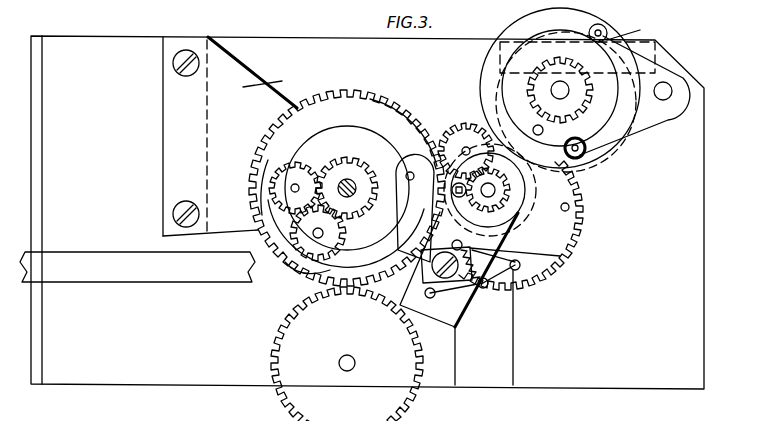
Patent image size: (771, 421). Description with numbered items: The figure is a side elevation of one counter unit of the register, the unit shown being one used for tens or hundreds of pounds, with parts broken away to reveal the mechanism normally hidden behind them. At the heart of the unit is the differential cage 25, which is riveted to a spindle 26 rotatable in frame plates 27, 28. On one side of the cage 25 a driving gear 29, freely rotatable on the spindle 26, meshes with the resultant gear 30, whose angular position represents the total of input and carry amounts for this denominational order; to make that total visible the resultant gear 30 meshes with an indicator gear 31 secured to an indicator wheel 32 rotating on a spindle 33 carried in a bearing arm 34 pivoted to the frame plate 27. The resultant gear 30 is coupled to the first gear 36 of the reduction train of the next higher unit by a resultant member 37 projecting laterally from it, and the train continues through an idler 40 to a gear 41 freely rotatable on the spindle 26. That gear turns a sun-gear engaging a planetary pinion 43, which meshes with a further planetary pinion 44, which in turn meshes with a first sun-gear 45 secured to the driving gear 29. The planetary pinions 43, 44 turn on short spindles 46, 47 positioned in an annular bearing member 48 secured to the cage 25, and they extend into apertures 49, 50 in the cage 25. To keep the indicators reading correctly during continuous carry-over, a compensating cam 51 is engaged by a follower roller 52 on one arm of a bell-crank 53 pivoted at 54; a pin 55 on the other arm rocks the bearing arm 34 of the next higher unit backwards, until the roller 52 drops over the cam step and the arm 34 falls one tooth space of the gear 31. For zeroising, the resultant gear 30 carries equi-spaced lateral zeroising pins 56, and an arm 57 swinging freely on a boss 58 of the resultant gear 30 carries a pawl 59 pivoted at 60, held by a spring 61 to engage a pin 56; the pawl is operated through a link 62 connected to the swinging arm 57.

The differential cage 25 is at (362, 290).
The spindle 26 is at (345, 180).
The frame plate 27 is at (262, 52).
The frame plate 28 is at (274, 80).
The driving gear 29 is at (348, 222).
The resultant gear 30 is at (553, 233).
The indicator gear 31 is at (542, 81).
The indicator wheel 32 is at (603, 26).
The spindle 33 is at (560, 80).
The bearing arm 34 is at (657, 42).
The first gear 36 is at (532, 187).
The resultant member 37 is at (469, 200).
The idler 40 is at (462, 125).
The gear 41 is at (408, 106).
The planetary pinion 43 is at (268, 160).
The planetary pinion 44 is at (325, 283).
The first sun-gear 45 is at (368, 172).
The short spindle 46 is at (290, 188).
The short spindle 47 is at (313, 236).
The annular bearing member 48 is at (343, 126).
The aperture 49 is at (268, 200).
The aperture 50 is at (297, 272).
The compensating cam 51 is at (523, 52).
The follower roller 52 is at (630, 33).
The bell-crank 53 is at (670, 66).
The pivot 54 is at (665, 100).
The pin 55 is at (565, 146).
The zeroising pin 56 is at (569, 207).
The arm 57 is at (560, 256).
The boss 58 is at (503, 240).
The pawl 59 is at (487, 285).
The pivot 60 is at (455, 300).
The spring 61 is at (475, 259).
The link 62 is at (113, 271).